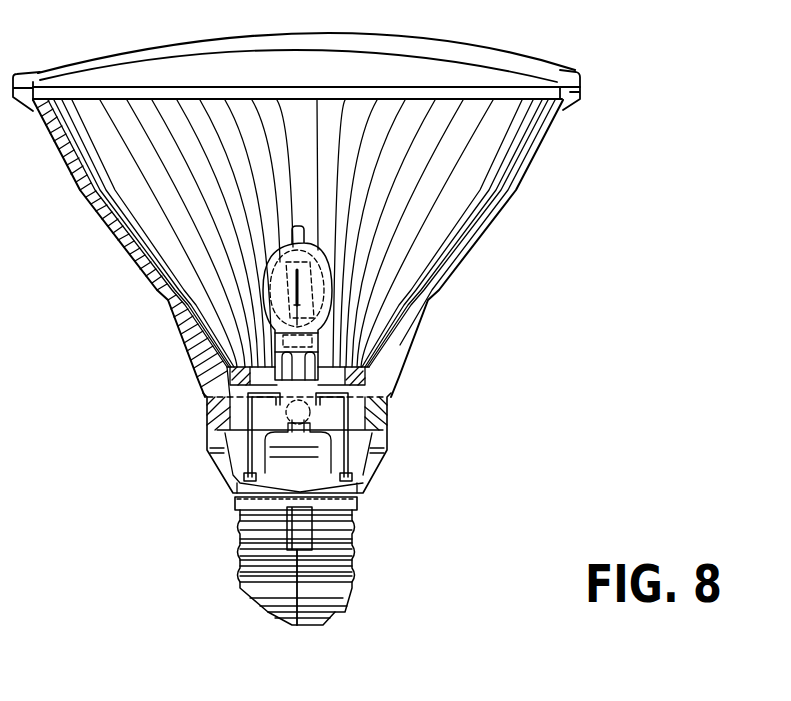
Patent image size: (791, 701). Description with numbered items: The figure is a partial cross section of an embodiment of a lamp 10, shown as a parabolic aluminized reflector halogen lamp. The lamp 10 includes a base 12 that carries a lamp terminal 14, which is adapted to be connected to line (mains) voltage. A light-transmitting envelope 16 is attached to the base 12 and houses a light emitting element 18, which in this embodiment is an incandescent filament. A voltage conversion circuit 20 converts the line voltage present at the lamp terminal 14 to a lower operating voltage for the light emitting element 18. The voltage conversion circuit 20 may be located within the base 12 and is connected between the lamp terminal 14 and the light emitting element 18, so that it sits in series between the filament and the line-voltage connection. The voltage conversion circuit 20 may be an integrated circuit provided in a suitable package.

The lamp 10 is at (462, 362).
The base 12 is at (230, 531).
The lamp terminal 14 is at (290, 622).
The light-transmitting envelope 16 is at (317, 253).
The light emitting element 18 is at (297, 288).
The voltage conversion circuit 20 is at (298, 525).